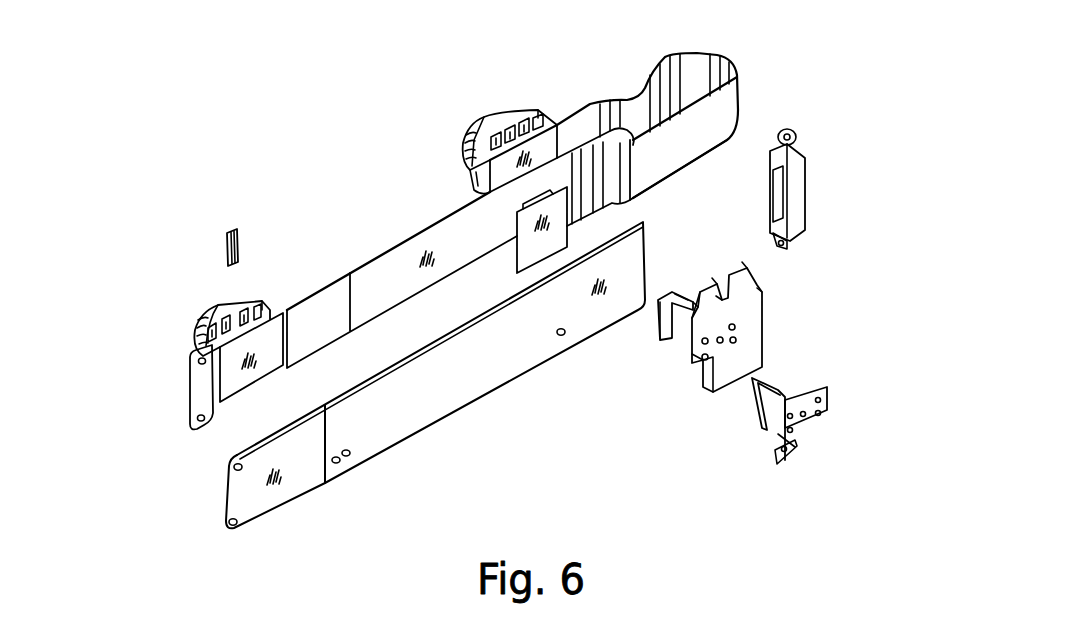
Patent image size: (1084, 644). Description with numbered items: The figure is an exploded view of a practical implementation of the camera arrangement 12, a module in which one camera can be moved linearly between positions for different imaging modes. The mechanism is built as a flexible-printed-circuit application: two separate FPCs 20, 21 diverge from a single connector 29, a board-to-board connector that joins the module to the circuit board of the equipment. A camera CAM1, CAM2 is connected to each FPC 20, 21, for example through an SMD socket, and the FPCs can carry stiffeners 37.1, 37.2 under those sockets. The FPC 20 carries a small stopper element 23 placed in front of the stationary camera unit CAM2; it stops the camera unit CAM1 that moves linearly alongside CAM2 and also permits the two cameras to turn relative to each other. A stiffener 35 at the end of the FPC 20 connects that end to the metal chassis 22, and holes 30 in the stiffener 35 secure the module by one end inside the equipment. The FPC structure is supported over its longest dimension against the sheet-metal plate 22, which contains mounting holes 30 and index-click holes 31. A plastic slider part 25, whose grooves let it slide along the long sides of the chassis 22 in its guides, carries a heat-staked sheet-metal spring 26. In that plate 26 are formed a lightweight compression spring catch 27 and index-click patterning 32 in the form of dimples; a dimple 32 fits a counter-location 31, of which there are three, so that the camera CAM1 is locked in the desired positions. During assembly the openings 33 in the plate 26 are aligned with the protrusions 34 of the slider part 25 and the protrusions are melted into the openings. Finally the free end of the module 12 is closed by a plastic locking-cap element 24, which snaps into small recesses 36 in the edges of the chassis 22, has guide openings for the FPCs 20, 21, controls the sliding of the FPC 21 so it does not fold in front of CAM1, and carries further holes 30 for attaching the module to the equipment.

The camera arrangement 12 is at (410, 126).
The flexible printed circuit 20 is at (371, 284).
The flexible printed circuit 21 is at (688, 66).
The metal chassis 22 is at (232, 495).
The stopper element 23 is at (236, 235).
The locking-cap element 24 is at (790, 127).
The slider part 25 is at (751, 318).
The sheet-metal spring 26 is at (790, 440).
The compression spring catch 27 is at (757, 398).
The connector 29 is at (528, 238).
The mounting holes 30 is at (241, 470).
The index-click holes 31 is at (562, 338).
The index-click patterning 32 is at (774, 462).
The openings 33 is at (812, 430).
The protrusions 34 is at (694, 360).
The stiffener 35 is at (200, 385).
The recesses 36 is at (633, 318).
The stiffener 37.1 is at (252, 372).
The stiffener 37.2 is at (476, 182).
The camera CAM1 is at (488, 97).
The camera CAM2 is at (204, 307).